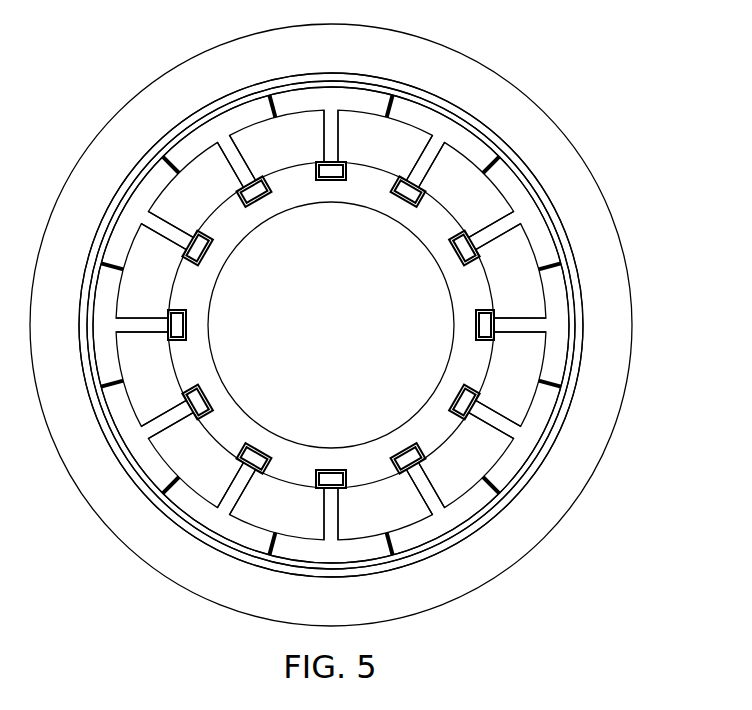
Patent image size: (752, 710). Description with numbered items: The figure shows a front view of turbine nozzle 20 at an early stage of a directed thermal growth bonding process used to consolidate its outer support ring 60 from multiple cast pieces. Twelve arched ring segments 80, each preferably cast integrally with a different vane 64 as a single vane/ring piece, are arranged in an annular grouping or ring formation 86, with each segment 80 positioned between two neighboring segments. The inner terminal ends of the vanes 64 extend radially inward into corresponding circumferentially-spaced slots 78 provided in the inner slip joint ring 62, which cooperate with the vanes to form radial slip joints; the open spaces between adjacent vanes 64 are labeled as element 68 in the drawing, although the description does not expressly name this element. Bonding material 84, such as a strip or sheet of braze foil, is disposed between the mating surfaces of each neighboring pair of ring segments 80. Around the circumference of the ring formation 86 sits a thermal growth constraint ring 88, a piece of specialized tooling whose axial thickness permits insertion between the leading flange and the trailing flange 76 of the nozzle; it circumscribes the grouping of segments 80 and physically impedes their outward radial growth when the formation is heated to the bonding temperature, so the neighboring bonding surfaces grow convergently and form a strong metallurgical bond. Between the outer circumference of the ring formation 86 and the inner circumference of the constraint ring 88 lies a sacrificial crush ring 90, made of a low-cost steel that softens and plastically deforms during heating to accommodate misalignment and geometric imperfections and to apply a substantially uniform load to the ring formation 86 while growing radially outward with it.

The turbine nozzle 20 is at (145, 65).
The outer support ring 60 is at (328, 326).
The inner slip joint ring 62 is at (399, 403).
The vanes 64 is at (331, 135).
The windings 68 is at (278, 163).
The trailing flange 76 is at (483, 134).
The slots 78 is at (401, 446).
The arched ring segments 80 is at (216, 126).
The bonding material 84 is at (161, 155).
The ring formation 86 is at (134, 159).
The thermal growth constraint ring 88 is at (616, 222).
The sacrificial crush ring 90 is at (556, 190).